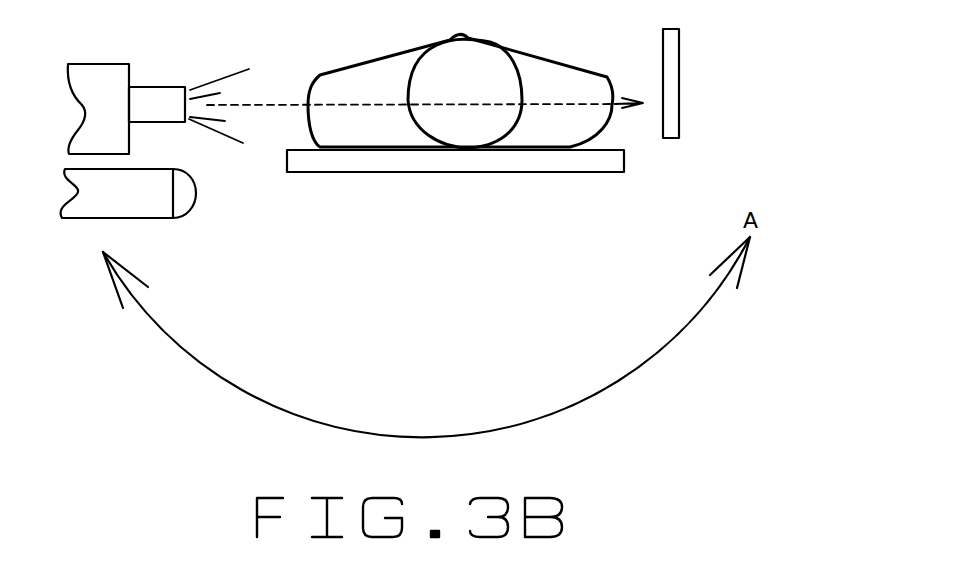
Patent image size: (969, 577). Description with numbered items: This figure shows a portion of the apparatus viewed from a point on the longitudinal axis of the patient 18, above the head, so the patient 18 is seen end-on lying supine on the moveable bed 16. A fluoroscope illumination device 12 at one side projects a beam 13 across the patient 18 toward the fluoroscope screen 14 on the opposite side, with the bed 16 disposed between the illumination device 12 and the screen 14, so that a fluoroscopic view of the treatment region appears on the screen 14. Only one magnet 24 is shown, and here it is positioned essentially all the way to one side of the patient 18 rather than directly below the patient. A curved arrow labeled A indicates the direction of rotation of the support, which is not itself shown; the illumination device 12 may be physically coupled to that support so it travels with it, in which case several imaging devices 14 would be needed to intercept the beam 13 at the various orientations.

The fluoroscope illumination device 12 is at (113, 64).
The beam 13 is at (237, 73).
The fluoroscope screen 14 is at (679, 93).
The moveable bed 16 is at (520, 163).
The patient 18 is at (483, 67).
The magnet 24 is at (193, 199).